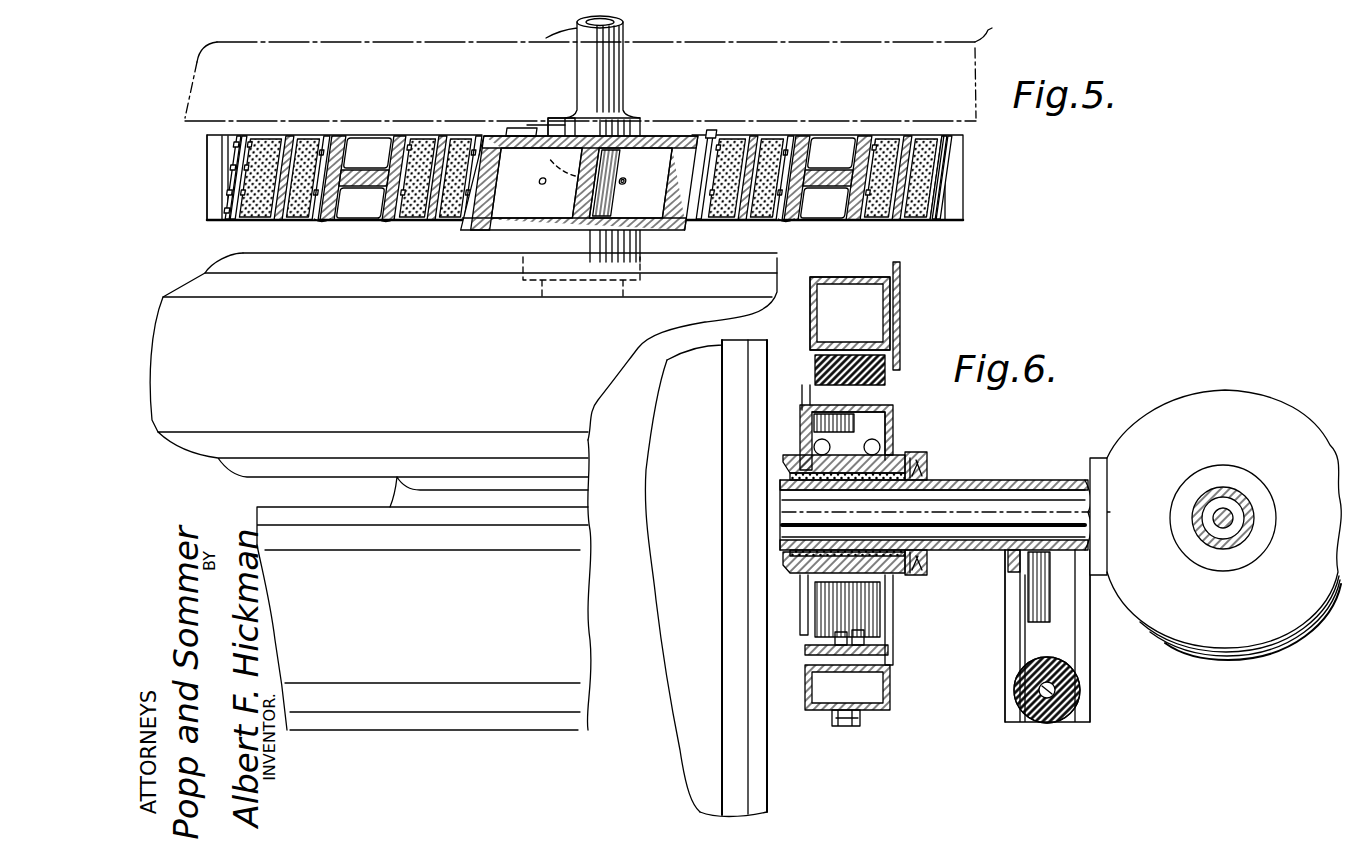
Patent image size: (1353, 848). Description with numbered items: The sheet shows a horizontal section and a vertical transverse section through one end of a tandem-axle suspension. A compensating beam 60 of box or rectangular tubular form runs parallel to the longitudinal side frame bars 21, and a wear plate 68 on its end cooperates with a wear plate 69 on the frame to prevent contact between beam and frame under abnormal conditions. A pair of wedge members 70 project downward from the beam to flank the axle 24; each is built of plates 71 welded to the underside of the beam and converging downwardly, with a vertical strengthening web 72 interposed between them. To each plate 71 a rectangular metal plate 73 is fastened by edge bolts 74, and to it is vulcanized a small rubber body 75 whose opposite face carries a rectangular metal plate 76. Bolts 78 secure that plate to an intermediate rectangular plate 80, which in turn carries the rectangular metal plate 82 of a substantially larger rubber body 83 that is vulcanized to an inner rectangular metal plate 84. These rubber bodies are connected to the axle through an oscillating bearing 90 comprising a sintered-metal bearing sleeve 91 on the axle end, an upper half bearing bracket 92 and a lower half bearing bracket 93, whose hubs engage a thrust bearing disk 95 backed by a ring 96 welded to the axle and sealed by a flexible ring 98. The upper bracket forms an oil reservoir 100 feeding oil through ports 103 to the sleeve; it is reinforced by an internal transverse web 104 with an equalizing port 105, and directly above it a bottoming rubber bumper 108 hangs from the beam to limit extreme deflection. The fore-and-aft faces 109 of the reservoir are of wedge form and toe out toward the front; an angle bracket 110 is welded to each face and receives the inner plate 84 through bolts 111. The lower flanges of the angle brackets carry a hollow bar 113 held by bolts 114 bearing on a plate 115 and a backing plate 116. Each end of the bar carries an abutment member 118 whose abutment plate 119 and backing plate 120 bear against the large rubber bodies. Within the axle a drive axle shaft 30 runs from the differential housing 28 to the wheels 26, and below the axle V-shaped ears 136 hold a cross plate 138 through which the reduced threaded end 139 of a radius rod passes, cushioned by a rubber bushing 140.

In FIG. 5, the longitudinal side frame bars 21 is at (995, 29).
In FIG. 5, the axle 24 is at (624, 22).
In FIG. 6, the axle 24 is at (1005, 486).
In FIG. 6, the wheels 26 is at (700, 788).
In FIG. 6, the differential housing 28 is at (1216, 396).
In FIG. 6, the drive axle shaft 30 is at (1080, 506).
In FIG. 6, the compensating beam 60 is at (806, 320).
In FIG. 5, the wear plate 68 is at (534, 124).
In FIG. 6, the wear plate 68 is at (901, 268).
In FIG. 5, the wear plate 69 is at (558, 128).
In FIG. 5, the wedge member 70 is at (820, 134).
In FIG. 5, the plates 71 is at (342, 142).
In FIG. 5, the vertical strengthening web 72 is at (599, 153).
In FIG. 5, the rectangular metal plate 73 is at (322, 217).
In FIG. 5, the edge bolts 74 is at (592, 202).
In FIG. 5, the rubber body 75 is at (306, 142).
In FIG. 5, the rectangular metal plate 76 is at (290, 142).
In FIG. 5, the bolts 78 is at (243, 140).
In FIG. 5, the intermediate rectangular plate 80 is at (294, 142).
In FIG. 5, the rectangular metal plate 82 is at (283, 140).
In FIG. 5, the rubber body 83 is at (248, 186).
In FIG. 5, the inner rectangular metal plate 84 is at (240, 172).
In FIG. 6, the oscillating bearing 90 is at (898, 444).
In FIG. 6, the bearing sleeve 91 is at (902, 468).
In FIG. 6, the upper half bearing bracket 92 is at (805, 462).
In FIG. 6, the lower half bearing bracket 93 is at (792, 572).
In FIG. 6, the thrust bearing disk 95 is at (927, 462).
In FIG. 6, the ring 96 is at (930, 566).
In FIG. 6, the flexible ring 98 is at (920, 578).
In FIG. 5, the reservoir 100 is at (512, 128).
In FIG. 6, the reservoir 100 is at (815, 418).
In FIG. 5, the ports 103 is at (540, 183).
In FIG. 5, the internal transverse web 104 is at (628, 181).
In FIG. 5, the equalizing port 105 is at (546, 160).
In FIG. 6, the bottoming rubber bumper 108 is at (848, 356).
In FIG. 5, the fore-and-aft faces 109 is at (500, 205).
In FIG. 5, the angle bracket 110 is at (702, 132).
In FIG. 6, the angle bracket 110 is at (815, 615).
In FIG. 5, the bolts 111 is at (624, 182).
In FIG. 6, the bar 113 is at (886, 703).
In FIG. 6, the bolts 114 is at (863, 636).
In FIG. 6, the plate 115 is at (888, 650).
In FIG. 6, the backing plate 116 is at (812, 712).
In FIG. 5, the abutment member 118 is at (222, 143).
In FIG. 5, the abutment plate 119 is at (232, 160).
In FIG. 5, the backing plate 120 is at (216, 153).
In FIG. 6, the V-shaped ears 136 is at (1006, 672).
In FIG. 6, the cross plate 138 is at (1063, 638).
In FIG. 6, the reduced threaded end 139 is at (1062, 720).
In FIG. 6, the rubber bushing 140 is at (1047, 700).